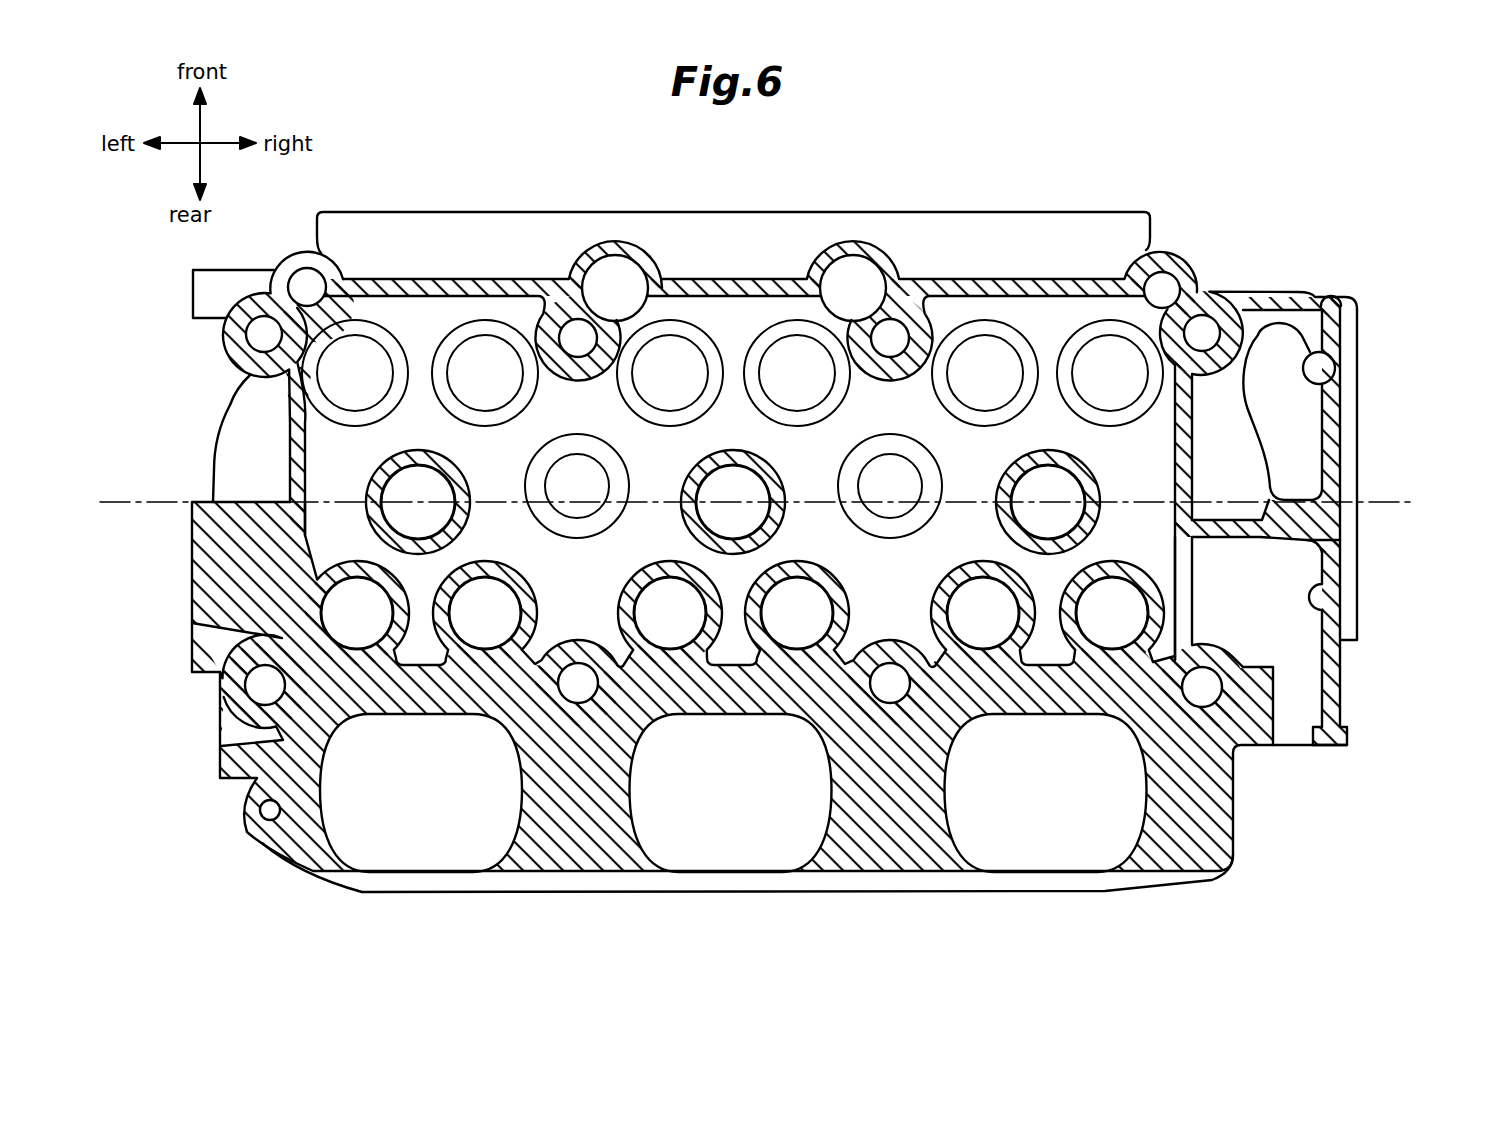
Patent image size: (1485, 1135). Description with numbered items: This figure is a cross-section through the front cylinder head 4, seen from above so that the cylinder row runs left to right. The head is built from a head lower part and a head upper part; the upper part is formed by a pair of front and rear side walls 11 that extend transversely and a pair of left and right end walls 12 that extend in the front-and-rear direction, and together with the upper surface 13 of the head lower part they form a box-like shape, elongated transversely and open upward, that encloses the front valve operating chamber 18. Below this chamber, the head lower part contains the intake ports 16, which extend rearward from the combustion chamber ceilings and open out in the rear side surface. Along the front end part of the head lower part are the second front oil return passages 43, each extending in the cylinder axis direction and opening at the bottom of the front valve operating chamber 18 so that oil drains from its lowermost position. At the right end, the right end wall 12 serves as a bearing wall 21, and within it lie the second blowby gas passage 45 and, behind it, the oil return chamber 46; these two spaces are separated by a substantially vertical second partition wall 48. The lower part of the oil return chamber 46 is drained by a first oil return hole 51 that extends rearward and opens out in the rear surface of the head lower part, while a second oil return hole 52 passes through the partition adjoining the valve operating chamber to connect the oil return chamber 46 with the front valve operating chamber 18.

The front cylinder head 4 is at (1218, 827).
The side wall 11 is at (267, 720).
The end wall 12 is at (295, 467).
The bearing wall 21 is at (1183, 480).
The upper surface of the head lower part 13 is at (345, 540).
The intake port 16 is at (515, 813).
The front valve operating chamber 18 is at (944, 613).
The second front oil return passage 43 is at (1182, 283).
The second blowby gas passage 45 is at (1330, 387).
The oil return chamber 46 is at (1313, 603).
The second partition wall 48 is at (1243, 537).
The first oil return hole 51 is at (1305, 740).
The second oil return hole 52 is at (1185, 640).